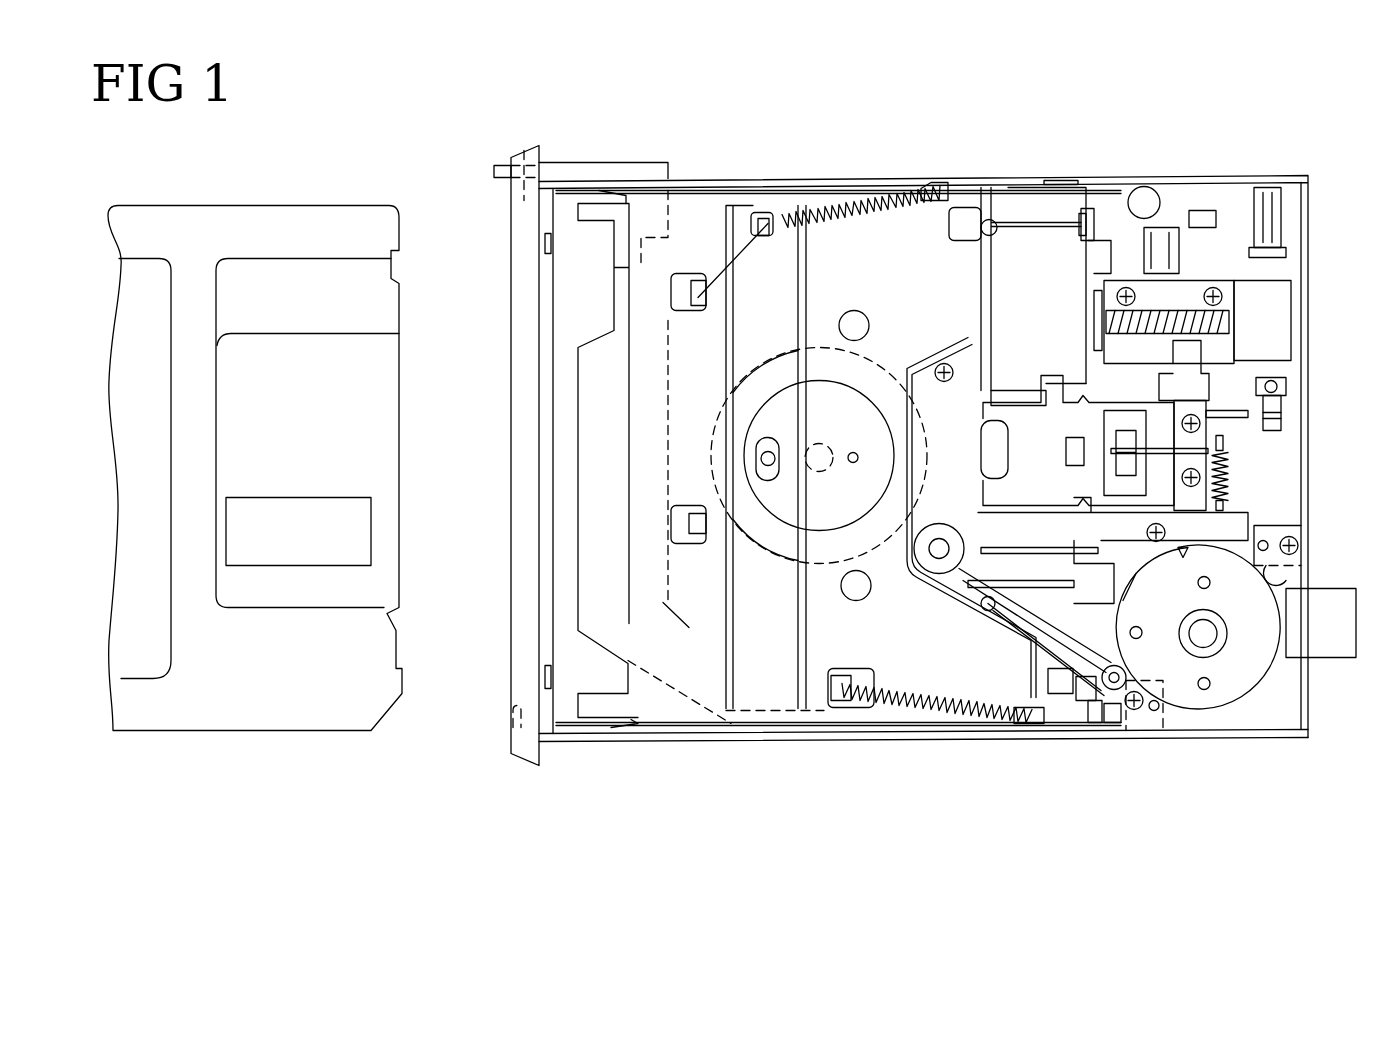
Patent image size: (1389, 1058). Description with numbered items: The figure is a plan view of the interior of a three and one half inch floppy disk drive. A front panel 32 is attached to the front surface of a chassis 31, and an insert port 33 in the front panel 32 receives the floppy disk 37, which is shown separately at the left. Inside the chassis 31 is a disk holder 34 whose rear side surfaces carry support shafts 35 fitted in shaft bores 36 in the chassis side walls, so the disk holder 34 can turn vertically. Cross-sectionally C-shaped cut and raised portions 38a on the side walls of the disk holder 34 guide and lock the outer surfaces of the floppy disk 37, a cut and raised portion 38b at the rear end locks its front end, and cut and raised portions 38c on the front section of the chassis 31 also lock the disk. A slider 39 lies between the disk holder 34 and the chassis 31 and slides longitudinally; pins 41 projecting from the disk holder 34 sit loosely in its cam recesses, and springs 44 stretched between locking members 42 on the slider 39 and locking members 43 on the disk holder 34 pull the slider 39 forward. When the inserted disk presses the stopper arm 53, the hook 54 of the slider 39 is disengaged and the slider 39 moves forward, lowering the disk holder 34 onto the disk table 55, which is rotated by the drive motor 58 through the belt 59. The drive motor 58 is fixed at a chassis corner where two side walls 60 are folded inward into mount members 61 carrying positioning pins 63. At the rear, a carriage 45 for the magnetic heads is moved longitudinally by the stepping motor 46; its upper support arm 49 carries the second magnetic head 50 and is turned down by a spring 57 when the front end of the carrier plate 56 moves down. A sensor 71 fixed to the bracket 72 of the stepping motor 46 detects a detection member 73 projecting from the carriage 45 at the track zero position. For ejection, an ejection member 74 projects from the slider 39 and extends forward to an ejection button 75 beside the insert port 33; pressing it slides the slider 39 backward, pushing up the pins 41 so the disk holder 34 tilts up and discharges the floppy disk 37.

The chassis 31 is at (1238, 163).
The front panel 32 is at (525, 765).
The insert port 33 is at (512, 710).
The disk holder 34 is at (905, 647).
The support shaft 35 is at (1095, 178).
The shaft bore 36 is at (1075, 178).
The floppy disk 37 is at (218, 205).
The cut and raised portion 38a is at (800, 180).
The cut and raised portion 38b is at (1100, 275).
The cut and raised portion 38c is at (545, 242).
The slider 39 is at (613, 287).
The pin 41 is at (758, 185).
The locking member 42 is at (940, 182).
The locking member 43 is at (750, 225).
The spring 44 is at (866, 192).
The carriage 45 is at (1109, 386).
The stepping motor 46 is at (1270, 300).
The upper support arm 49 is at (1020, 403).
The second magnetic head 50 is at (988, 450).
The stopper arm 53 is at (1043, 693).
The hook 54 is at (1080, 700).
The disk table 55 is at (760, 547).
The carrier plate 56 is at (993, 263).
The spring 57 is at (1232, 475).
The drive motor 58 is at (1222, 690).
The belt 59 is at (945, 560).
The side wall 60 is at (1307, 697).
The mount member 61 is at (1300, 582).
The positioning pin 63 is at (1282, 527).
The sensor 71 is at (1282, 410).
The bracket 72 is at (1285, 365).
The detection member 73 is at (1240, 425).
The ejection member 74 is at (632, 162).
The ejection button 75 is at (495, 165).